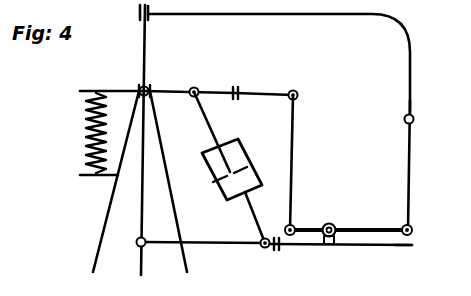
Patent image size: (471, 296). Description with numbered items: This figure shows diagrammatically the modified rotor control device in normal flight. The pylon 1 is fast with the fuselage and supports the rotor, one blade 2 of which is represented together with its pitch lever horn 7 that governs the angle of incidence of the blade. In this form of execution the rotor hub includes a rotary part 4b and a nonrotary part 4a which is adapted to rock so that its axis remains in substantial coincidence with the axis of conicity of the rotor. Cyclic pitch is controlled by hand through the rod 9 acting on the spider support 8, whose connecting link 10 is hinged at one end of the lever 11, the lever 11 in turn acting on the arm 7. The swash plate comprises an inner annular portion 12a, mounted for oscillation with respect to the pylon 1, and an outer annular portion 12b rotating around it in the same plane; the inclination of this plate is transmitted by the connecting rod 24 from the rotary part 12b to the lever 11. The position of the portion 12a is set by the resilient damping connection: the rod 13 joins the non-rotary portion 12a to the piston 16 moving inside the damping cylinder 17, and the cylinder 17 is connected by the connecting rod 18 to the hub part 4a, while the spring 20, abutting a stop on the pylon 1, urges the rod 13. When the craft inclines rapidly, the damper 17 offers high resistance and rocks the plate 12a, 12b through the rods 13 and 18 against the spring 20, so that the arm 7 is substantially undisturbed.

The pylon 1 is at (102, 228).
The blade 2 is at (398, 250).
The nonrotary part of the rotor hub 4a is at (203, 255).
The rotary part of the rotor hub 4b is at (286, 247).
The pitch lever horn 7 is at (343, 247).
The spider support 8 is at (346, 16).
The rod 9 is at (146, 52).
The connecting link 10 is at (411, 162).
The lever 11 is at (348, 226).
The inner annular portion of the swash-plate 12a is at (170, 91).
The outer annular portion of the swash-plate 12b is at (258, 90).
The rod 13 is at (207, 129).
The piston 16 is at (222, 170).
The damping cylinder 17 is at (222, 196).
The connecting rod 18 is at (249, 219).
The spring 20 is at (85, 123).
The connecting rod 24 is at (296, 152).